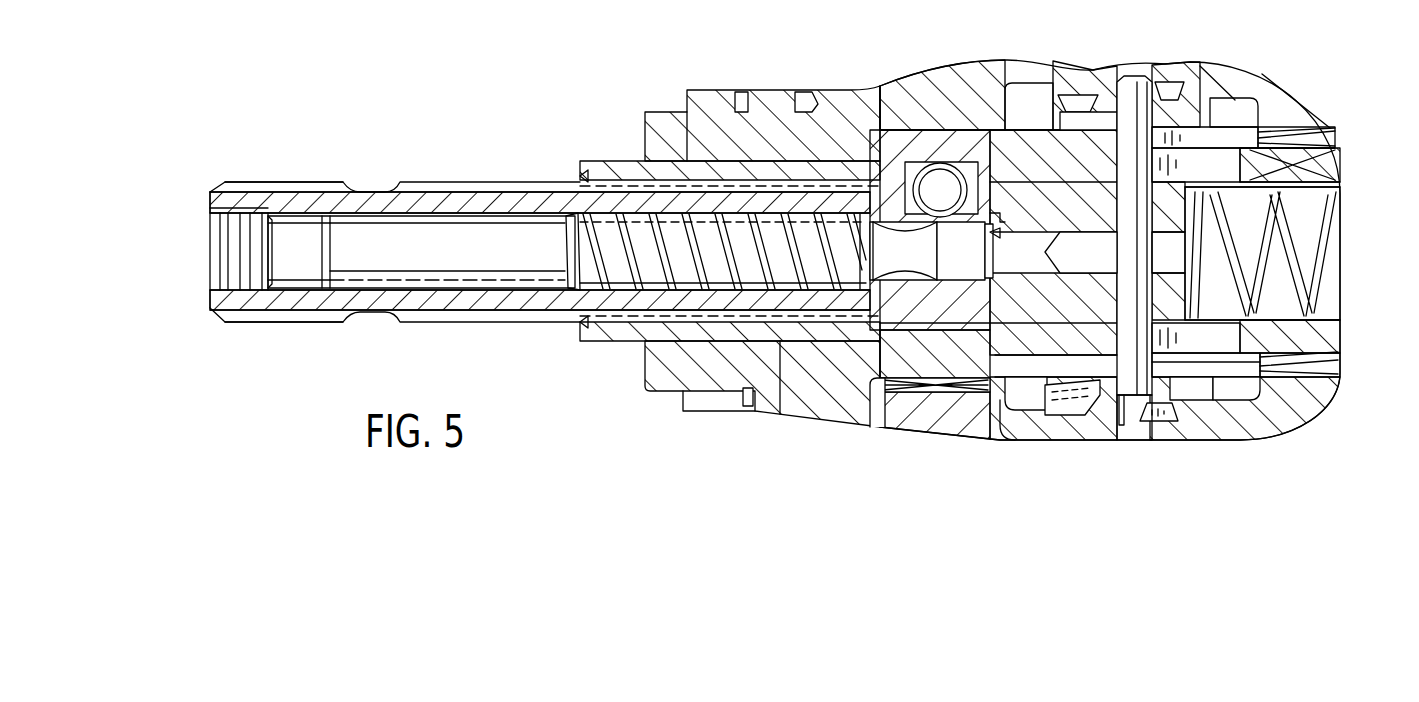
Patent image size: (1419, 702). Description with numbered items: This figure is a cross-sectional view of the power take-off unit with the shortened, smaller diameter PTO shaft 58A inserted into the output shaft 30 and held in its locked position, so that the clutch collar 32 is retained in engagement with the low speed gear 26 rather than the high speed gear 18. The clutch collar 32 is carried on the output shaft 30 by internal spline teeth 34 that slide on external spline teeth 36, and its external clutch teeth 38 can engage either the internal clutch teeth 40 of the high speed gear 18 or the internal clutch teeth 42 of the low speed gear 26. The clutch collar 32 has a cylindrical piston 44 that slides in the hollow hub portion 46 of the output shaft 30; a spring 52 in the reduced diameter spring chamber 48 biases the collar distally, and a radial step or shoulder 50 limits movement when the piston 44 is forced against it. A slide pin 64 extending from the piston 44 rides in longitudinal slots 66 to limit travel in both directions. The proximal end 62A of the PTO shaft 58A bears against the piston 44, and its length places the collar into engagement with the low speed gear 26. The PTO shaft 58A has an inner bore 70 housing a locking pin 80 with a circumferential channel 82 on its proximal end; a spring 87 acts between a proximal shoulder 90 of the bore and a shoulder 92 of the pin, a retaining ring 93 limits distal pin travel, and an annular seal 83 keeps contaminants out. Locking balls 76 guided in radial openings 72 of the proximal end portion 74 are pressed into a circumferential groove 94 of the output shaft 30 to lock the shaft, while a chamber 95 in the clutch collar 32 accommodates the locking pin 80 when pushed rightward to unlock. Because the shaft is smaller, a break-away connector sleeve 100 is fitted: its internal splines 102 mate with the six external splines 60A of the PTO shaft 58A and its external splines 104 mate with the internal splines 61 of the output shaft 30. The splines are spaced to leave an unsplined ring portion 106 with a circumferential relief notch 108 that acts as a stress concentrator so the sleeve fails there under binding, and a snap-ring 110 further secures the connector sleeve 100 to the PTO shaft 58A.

The high speed gear 18 is at (1150, 66).
The low speed gear 26 is at (947, 72).
The output shaft 30 is at (641, 386).
The clutch collar 32 is at (1106, 96).
The internal spline teeth 34 is at (1300, 342).
The external spline teeth 36 is at (1230, 128).
The external clutch teeth 38 is at (1080, 418).
The internal clutch teeth 40 is at (1178, 410).
The internal clutch teeth 42 is at (1012, 440).
The cylindrical piston 44 is at (1062, 332).
The hollow hub portion 46 is at (1255, 285).
The spring chamber 48 is at (1302, 296).
The radial step or shoulder 50 is at (1278, 186).
The spring 52 is at (1325, 258).
The PTO shaft 58A is at (250, 326).
The external splines 60A is at (415, 322).
The internal splines 61 is at (797, 340).
The proximal end 62A is at (1030, 128).
The slide pin 64 is at (1122, 252).
The longitudinal slots 66 is at (1183, 128).
The inner bore 70 is at (428, 210).
The radial openings 72 is at (934, 171).
The proximal end portion 74 is at (962, 360).
The locking ball 76 is at (960, 110).
The locking pin 80 is at (256, 266).
The circumferential channel 82 is at (895, 347).
The annular seal 83 is at (340, 235).
The spring 87 is at (575, 230).
The proximal shoulder 90 is at (895, 128).
The shoulder 92 is at (580, 325).
The retaining ring 93 is at (1002, 286).
The circumferential groove 94 is at (928, 400).
The chamber 95 is at (1025, 252).
The connector sleeve 100 is at (578, 366).
The internal splines 102 is at (614, 160).
The external splines 104 is at (806, 92).
The unsplined ring portion 106 is at (688, 110).
The circumferential relief notch 108 is at (737, 112).
The snap-ring 110 is at (576, 178).